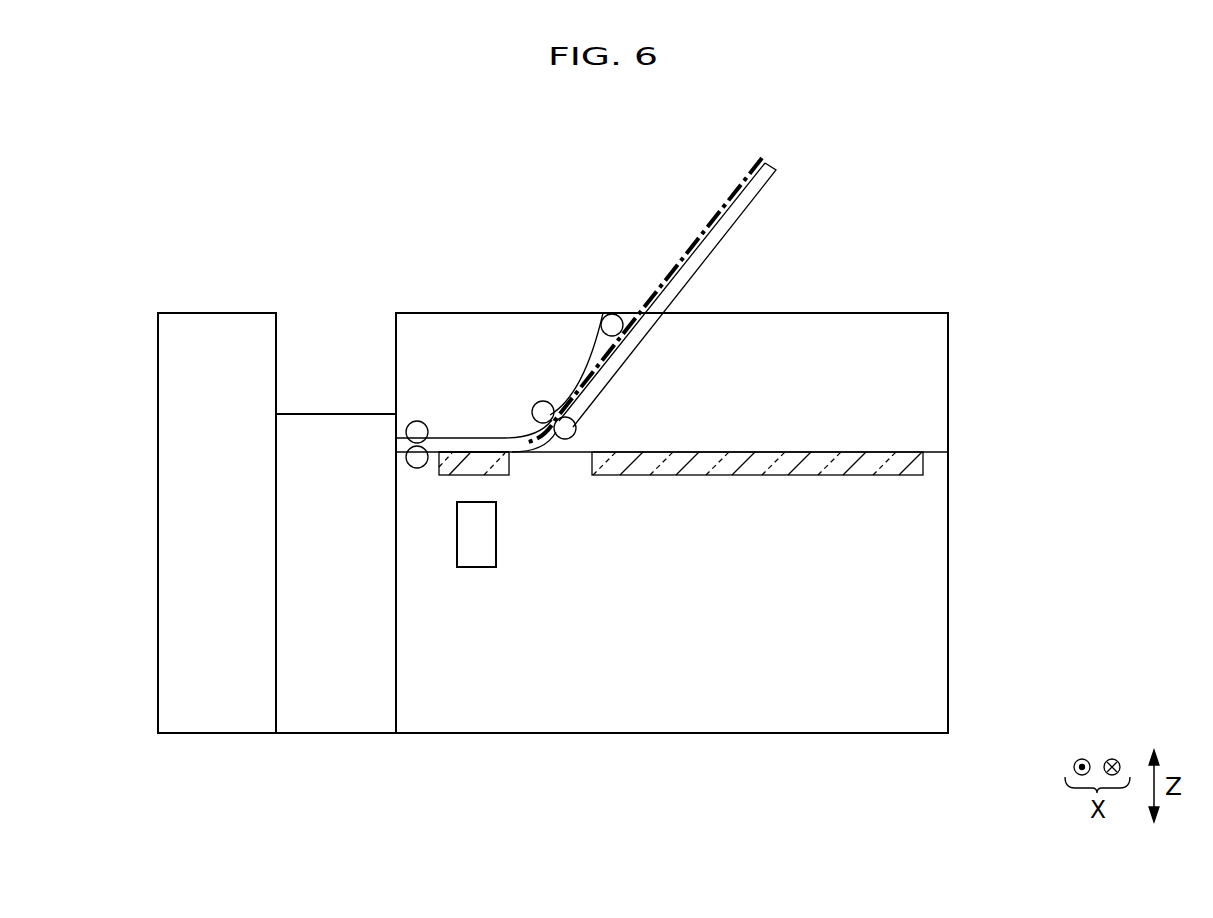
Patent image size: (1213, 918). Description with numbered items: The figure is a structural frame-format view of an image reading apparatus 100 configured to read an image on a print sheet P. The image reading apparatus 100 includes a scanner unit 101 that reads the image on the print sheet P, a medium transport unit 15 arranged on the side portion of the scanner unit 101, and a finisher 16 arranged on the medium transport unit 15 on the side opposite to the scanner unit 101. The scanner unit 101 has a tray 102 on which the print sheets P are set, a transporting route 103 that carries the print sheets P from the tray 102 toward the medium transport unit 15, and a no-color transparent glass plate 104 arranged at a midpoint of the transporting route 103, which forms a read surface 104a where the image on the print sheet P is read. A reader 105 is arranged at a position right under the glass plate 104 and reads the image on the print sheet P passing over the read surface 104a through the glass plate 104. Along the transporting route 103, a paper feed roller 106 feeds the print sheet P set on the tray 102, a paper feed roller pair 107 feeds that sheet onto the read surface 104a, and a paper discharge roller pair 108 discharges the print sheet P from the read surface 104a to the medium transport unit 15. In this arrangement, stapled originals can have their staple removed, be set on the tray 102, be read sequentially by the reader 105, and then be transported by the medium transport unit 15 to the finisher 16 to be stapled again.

The image reading apparatus 100 is at (855, 145).
The scanner unit 101 is at (886, 313).
The tray 102 is at (748, 210).
The transporting route 103 is at (509, 425).
The glass plate 104 is at (481, 474).
The read surface 104a is at (469, 452).
The reader 105 is at (496, 530).
The paper feed roller 106 is at (614, 314).
The paper feed roller pair 107 is at (545, 401).
The paper discharge roller pair 108 is at (420, 421).
The medium transport unit 15 is at (339, 414).
The finisher 16 is at (220, 313).
The print sheet P is at (682, 253).